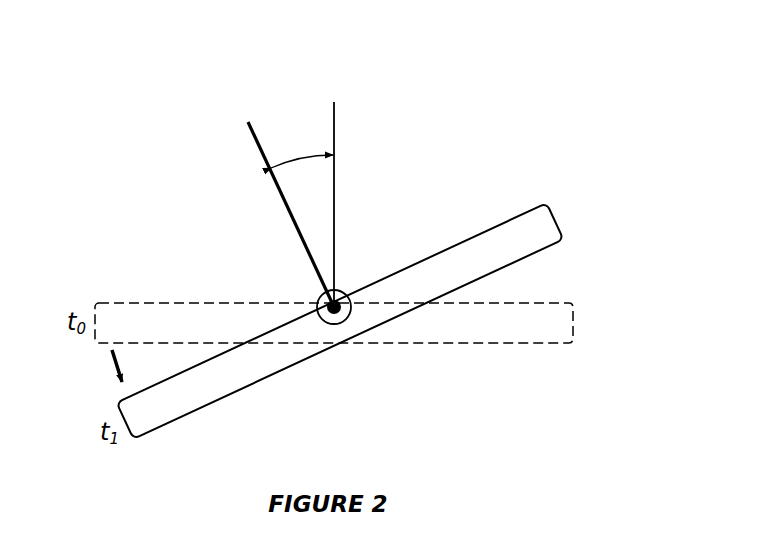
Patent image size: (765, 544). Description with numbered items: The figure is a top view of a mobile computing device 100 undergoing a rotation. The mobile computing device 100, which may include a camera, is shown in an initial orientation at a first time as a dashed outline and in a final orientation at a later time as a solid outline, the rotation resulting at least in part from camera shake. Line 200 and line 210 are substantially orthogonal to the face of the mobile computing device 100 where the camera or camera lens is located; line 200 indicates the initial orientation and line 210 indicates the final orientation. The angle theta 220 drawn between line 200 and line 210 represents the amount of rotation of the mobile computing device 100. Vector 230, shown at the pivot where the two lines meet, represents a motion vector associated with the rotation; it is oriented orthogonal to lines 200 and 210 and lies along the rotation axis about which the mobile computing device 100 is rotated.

The mobile computing device 100 is at (564, 219).
The line 200 is at (338, 116).
The line 210 is at (250, 140).
The angle Θ 220 is at (304, 163).
The motion vector 230 is at (339, 324).